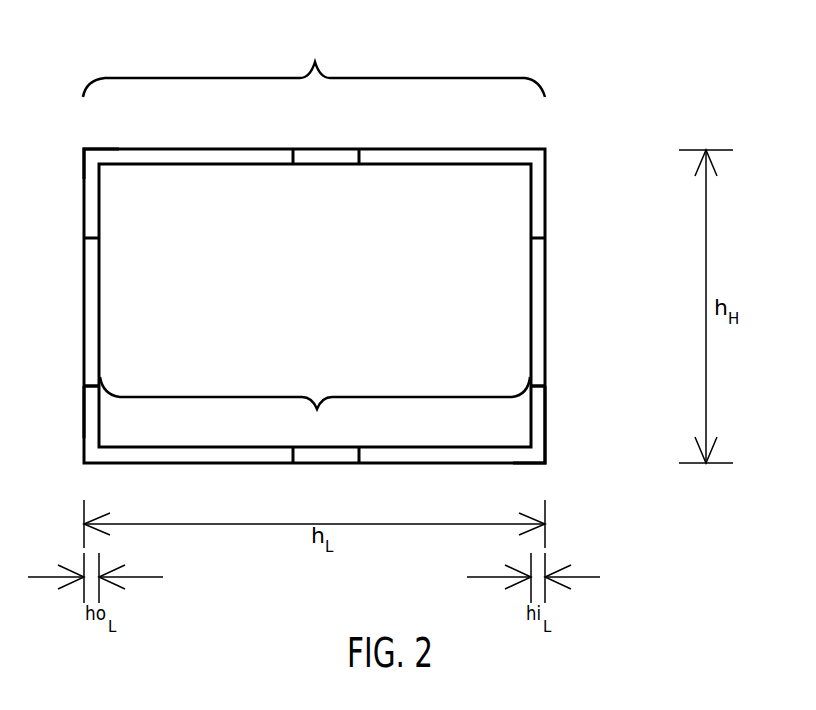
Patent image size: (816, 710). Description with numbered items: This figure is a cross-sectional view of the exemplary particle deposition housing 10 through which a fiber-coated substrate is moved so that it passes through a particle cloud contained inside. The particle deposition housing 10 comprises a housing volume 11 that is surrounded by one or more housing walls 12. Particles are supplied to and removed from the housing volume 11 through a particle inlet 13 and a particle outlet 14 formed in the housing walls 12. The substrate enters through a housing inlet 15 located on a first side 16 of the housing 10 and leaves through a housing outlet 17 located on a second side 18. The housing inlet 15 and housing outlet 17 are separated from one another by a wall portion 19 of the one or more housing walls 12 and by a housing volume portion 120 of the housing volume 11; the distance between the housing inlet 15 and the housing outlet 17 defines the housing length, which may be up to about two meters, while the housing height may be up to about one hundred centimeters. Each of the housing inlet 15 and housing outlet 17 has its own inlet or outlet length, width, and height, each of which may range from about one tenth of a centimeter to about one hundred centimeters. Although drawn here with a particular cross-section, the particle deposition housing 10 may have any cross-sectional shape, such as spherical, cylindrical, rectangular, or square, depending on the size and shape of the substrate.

The particle deposition housing 10 is at (553, 165).
The housing volume 11 is at (432, 193).
The housing walls 12 is at (119, 149).
The particle inlet 13 is at (339, 149).
The particle outlet 14 is at (333, 458).
The housing inlet 15 is at (537, 284).
The first side 16 is at (546, 397).
The housing outlet 17 is at (88, 302).
The second side 18 is at (84, 418).
The wall portion 19 is at (314, 63).
The housing volume portion 120 is at (315, 406).